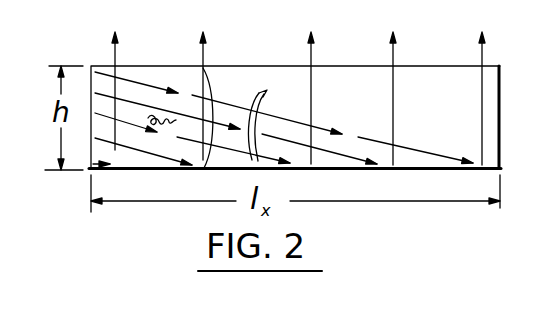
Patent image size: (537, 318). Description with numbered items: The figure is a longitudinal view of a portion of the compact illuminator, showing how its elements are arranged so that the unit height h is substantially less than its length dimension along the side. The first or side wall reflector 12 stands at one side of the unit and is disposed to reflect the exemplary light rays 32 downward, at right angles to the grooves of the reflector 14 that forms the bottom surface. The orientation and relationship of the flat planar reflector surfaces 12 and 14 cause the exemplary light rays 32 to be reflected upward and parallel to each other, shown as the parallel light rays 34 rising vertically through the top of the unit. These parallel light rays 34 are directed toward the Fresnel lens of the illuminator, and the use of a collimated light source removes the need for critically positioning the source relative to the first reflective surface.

The side wall reflector 12 is at (91, 148).
The grooved reflector 14 is at (427, 166).
The exemplary light rays 32 is at (271, 120).
The parallel light rays 34 is at (200, 50).